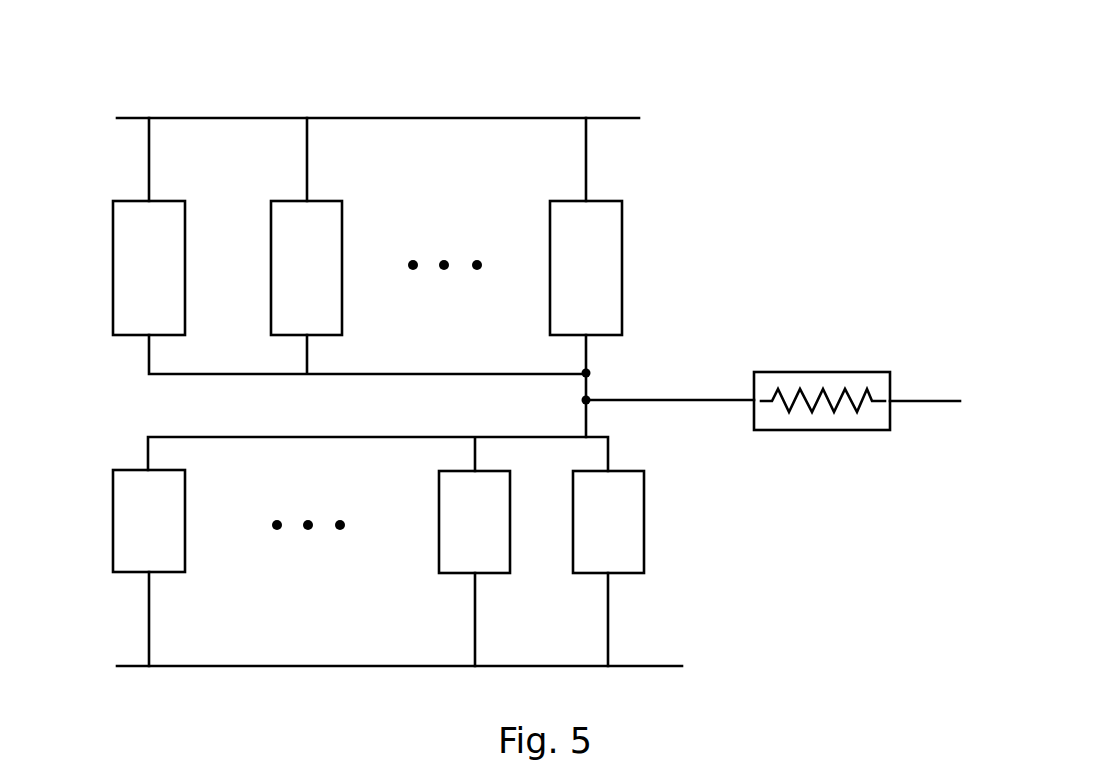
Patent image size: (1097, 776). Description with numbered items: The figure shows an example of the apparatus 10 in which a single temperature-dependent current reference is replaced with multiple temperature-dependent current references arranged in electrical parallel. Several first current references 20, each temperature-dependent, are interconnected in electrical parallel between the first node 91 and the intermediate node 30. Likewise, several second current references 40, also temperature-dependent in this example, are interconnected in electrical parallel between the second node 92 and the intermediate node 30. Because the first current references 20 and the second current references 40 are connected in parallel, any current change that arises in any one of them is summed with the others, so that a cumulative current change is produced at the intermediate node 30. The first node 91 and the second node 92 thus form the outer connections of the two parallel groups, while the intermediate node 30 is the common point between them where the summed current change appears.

The apparatus 10 is at (702, 102).
The first current reference 20 is at (112, 255).
The intermediate node 30 is at (592, 405).
The second current reference 40 is at (110, 490).
The first node 91 is at (352, 118).
The second node 92 is at (310, 667).